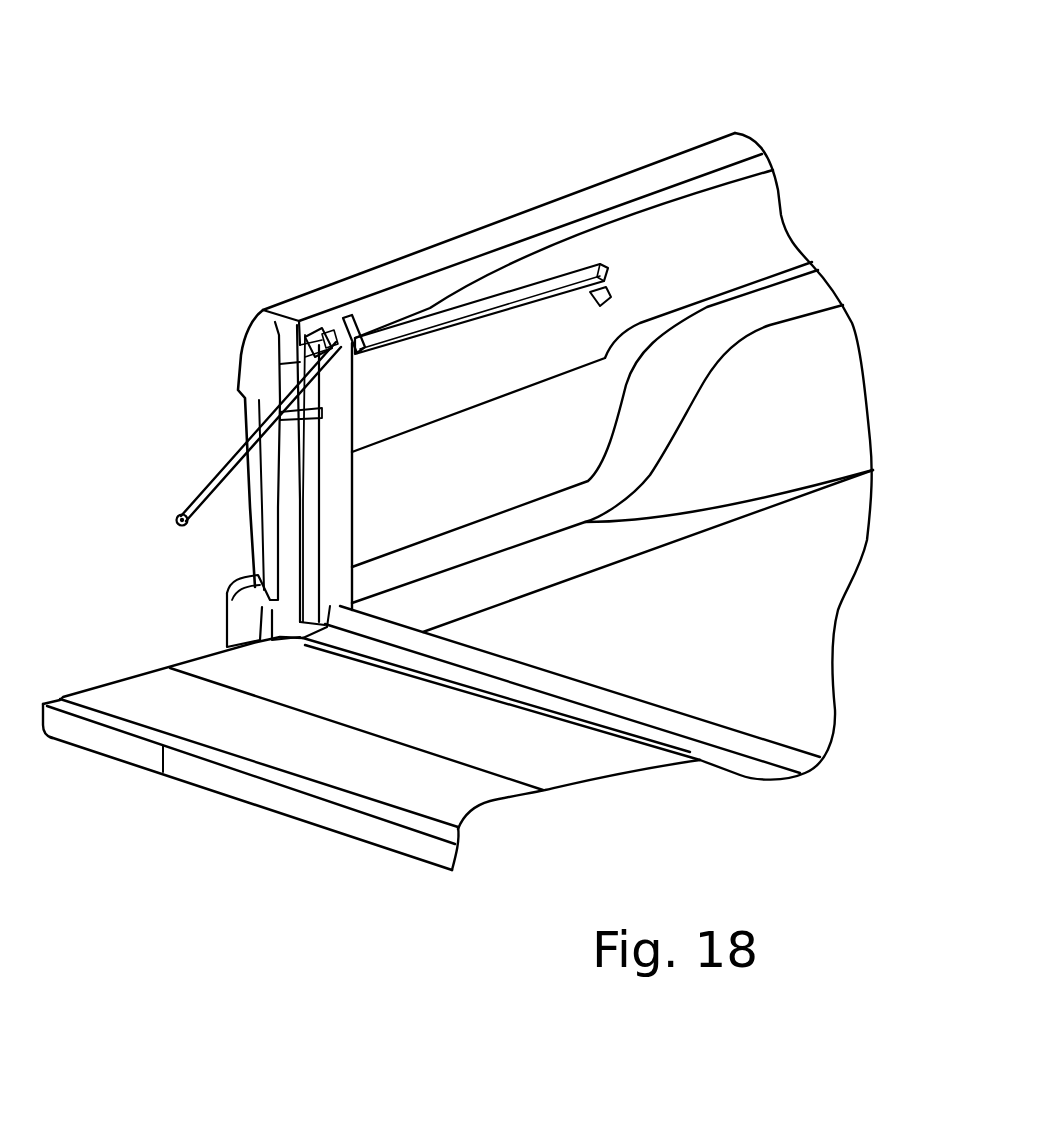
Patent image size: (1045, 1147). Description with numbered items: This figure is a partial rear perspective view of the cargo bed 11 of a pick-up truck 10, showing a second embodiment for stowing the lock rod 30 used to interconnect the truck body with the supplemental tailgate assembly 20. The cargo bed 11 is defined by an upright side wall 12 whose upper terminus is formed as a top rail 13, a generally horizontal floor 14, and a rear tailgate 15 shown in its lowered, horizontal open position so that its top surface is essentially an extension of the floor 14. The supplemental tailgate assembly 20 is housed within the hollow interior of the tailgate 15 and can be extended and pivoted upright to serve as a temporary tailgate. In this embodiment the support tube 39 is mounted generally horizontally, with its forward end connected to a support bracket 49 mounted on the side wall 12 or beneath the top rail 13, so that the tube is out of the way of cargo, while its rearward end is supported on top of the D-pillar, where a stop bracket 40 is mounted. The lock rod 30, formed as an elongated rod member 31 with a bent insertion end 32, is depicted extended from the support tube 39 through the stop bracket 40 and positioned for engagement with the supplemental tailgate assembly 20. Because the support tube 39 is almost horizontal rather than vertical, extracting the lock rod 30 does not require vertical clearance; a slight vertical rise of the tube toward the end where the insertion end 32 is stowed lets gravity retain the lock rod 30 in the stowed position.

The pick-up truck 10 is at (347, 172).
The cargo bed 11 is at (777, 107).
The side wall 12 is at (762, 218).
The top rail 13 is at (575, 208).
The floor 14 is at (787, 670).
The tailgate 15 is at (160, 703).
The supplemental tailgate assembly 20 is at (263, 793).
The lock rod 30 is at (184, 418).
The elongated rod member 31 is at (206, 468).
The insertion end 32 is at (175, 527).
The support tube 39 is at (472, 305).
The stop bracket 40 is at (337, 335).
The support bracket 49 is at (604, 297).